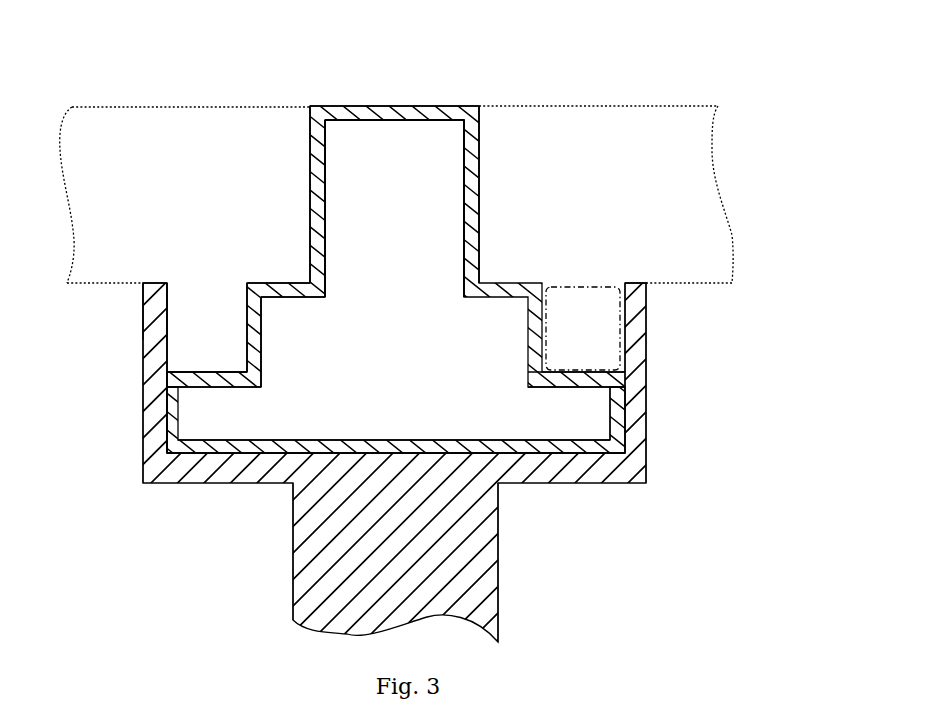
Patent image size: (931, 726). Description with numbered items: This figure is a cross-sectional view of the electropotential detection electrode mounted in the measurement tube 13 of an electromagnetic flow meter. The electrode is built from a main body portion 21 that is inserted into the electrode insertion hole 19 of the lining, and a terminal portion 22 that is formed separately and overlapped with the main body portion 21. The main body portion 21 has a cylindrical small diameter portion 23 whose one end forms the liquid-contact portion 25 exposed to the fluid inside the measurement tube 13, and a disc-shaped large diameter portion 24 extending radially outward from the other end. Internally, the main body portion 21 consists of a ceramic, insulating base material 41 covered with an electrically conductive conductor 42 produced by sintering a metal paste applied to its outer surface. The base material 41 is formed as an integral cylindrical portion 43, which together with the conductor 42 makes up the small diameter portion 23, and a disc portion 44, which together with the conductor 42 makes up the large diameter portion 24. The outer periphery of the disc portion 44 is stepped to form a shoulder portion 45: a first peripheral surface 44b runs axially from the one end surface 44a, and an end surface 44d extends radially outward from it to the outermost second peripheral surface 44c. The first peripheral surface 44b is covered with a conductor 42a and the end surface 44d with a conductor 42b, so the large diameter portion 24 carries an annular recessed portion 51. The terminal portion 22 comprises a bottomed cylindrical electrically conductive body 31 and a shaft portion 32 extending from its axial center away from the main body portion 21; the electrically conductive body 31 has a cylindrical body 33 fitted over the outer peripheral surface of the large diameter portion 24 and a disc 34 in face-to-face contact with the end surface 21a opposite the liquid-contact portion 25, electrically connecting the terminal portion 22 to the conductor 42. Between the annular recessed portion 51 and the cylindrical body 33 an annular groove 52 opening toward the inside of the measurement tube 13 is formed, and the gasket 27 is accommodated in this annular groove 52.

The measurement tube 13 is at (178, 97).
The electrode insertion hole 19 is at (326, 152).
The main body portion 21 is at (456, 363).
The end surface 21a is at (532, 455).
The terminal portion 22 is at (465, 423).
The small diameter portion 23 is at (310, 137).
The large diameter portion 24 is at (625, 388).
The liquid-contact portion 25 is at (440, 106).
The gasket 27 is at (624, 300).
The electrically conductive body 31 is at (476, 363).
The shaft portion 32 is at (500, 565).
The cylindrical body 33 is at (648, 406).
The disc 34 is at (598, 483).
The base material 41 is at (482, 152).
The conductor 42 is at (478, 176).
The conductor 42a is at (272, 378).
The conductor 42b is at (223, 388).
The cylindrical portion 43 is at (340, 180).
The disc portion 44 is at (167, 402).
The one end surface 44a is at (292, 283).
The first peripheral surface 44b is at (245, 360).
The second peripheral surface 44c is at (167, 425).
The end surface 44d is at (167, 357).
The shoulder portion 45 is at (165, 335).
The annular recessed portion 51 is at (222, 365).
The annular groove 52 is at (565, 370).